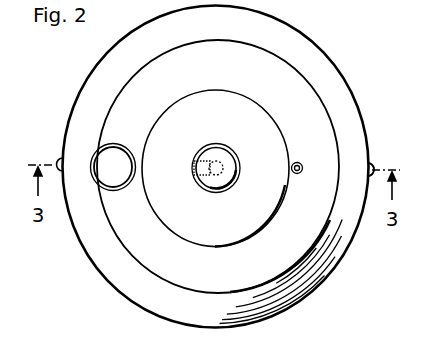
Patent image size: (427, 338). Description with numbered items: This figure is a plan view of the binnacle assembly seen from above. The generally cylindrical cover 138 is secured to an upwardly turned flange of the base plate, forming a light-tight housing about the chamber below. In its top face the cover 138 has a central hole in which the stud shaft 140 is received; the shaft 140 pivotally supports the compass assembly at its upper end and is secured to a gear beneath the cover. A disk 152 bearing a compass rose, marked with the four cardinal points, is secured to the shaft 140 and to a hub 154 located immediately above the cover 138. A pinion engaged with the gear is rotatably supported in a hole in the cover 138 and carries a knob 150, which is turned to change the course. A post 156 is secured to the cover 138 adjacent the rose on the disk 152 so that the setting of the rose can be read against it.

The cover 138 is at (321, 43).
The stud shaft 140 is at (373, 163).
The knob 150 is at (116, 155).
The disk 152 is at (269, 113).
The hub 154 is at (226, 150).
The post 156 is at (295, 162).